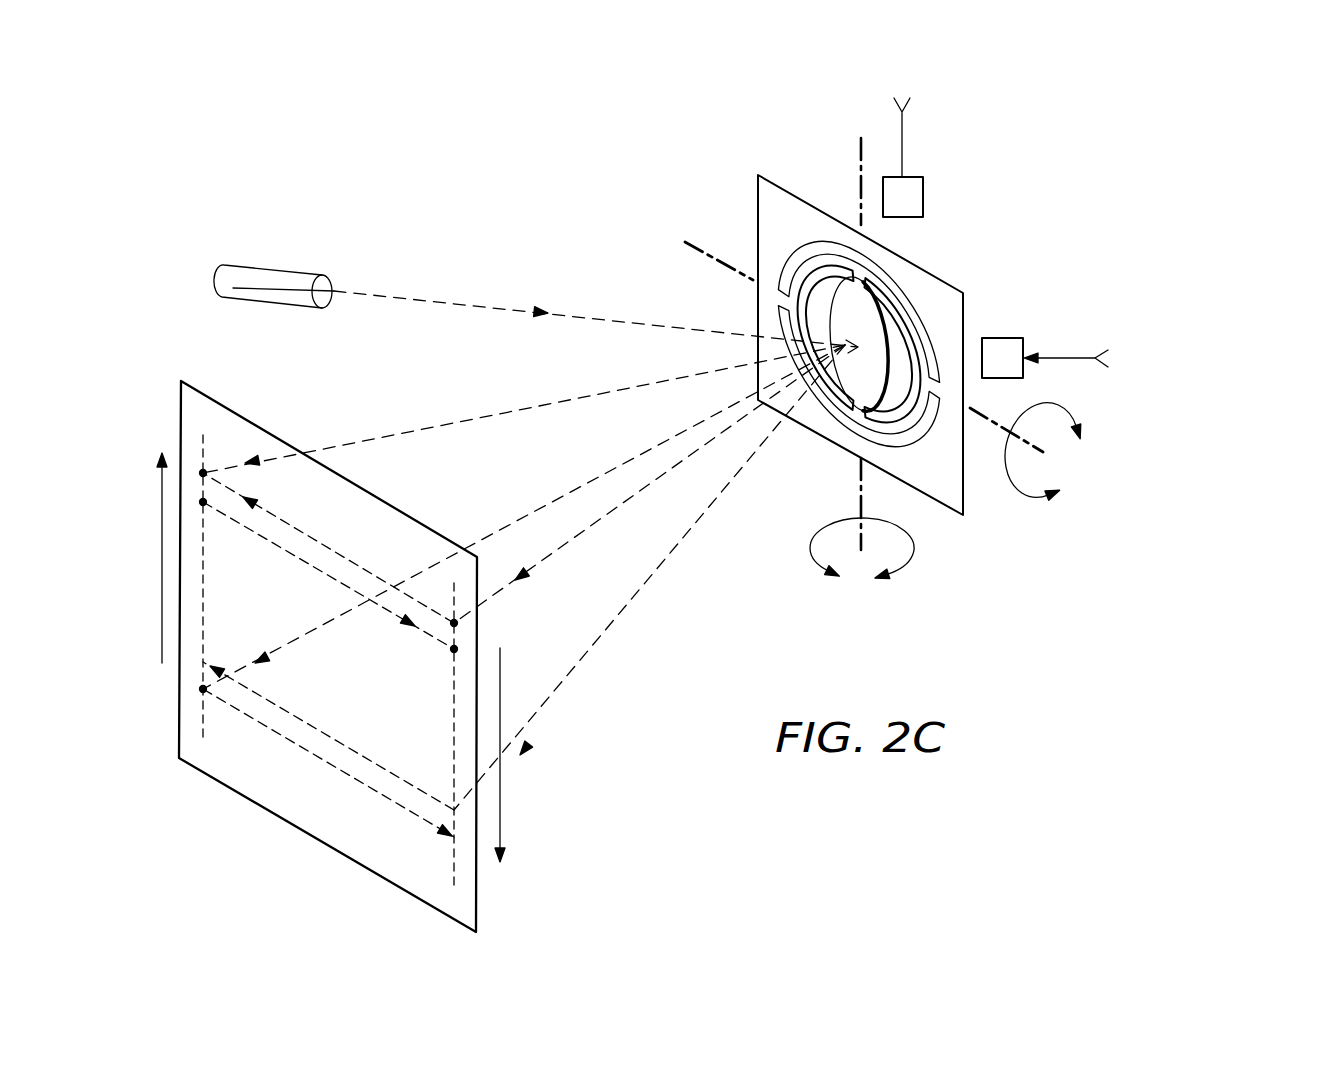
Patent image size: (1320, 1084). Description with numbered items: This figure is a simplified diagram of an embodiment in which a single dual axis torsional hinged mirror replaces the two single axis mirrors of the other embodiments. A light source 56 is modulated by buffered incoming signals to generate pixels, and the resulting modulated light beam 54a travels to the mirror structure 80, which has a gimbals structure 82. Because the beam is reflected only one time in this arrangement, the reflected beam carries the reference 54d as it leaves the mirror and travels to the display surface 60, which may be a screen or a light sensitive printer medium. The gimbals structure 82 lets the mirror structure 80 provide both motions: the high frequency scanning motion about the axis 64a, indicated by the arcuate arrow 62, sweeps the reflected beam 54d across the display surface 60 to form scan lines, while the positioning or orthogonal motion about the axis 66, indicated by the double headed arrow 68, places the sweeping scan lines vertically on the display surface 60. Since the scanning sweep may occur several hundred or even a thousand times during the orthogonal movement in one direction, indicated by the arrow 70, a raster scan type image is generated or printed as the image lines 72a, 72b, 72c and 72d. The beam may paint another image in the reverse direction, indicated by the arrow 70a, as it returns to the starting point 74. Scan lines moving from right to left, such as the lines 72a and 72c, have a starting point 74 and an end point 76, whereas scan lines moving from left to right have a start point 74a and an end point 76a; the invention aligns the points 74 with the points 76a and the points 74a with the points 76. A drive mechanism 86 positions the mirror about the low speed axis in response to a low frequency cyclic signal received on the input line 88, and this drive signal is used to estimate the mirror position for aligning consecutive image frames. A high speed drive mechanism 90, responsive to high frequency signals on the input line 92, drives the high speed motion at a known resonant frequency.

The modulated light beam 54a is at (456, 302).
The reflected beam 54d is at (461, 420).
The light source 56 is at (280, 266).
The display surface 60 is at (345, 850).
The arcuate arrow 62 is at (812, 572).
The axis 64a is at (858, 150).
The axis 66 is at (697, 252).
The double headed arrow 68 is at (1047, 497).
The arrow 70 is at (503, 813).
The arrow 70a is at (158, 558).
The image line 72a is at (292, 517).
The image line 72b is at (303, 563).
The image line 72c is at (375, 763).
The image line 72d is at (296, 748).
The starting point 74 is at (465, 624).
The start point 74a is at (207, 507).
The end point 76 is at (208, 470).
The end point 76a is at (452, 652).
The mirror structure 80 is at (985, 255).
The gimbals structure 82 is at (786, 276).
The drive mechanism 86 is at (1000, 337).
The input line 88 is at (1063, 356).
The high speed drive mechanism 90 is at (925, 197).
The input line 92 is at (905, 150).